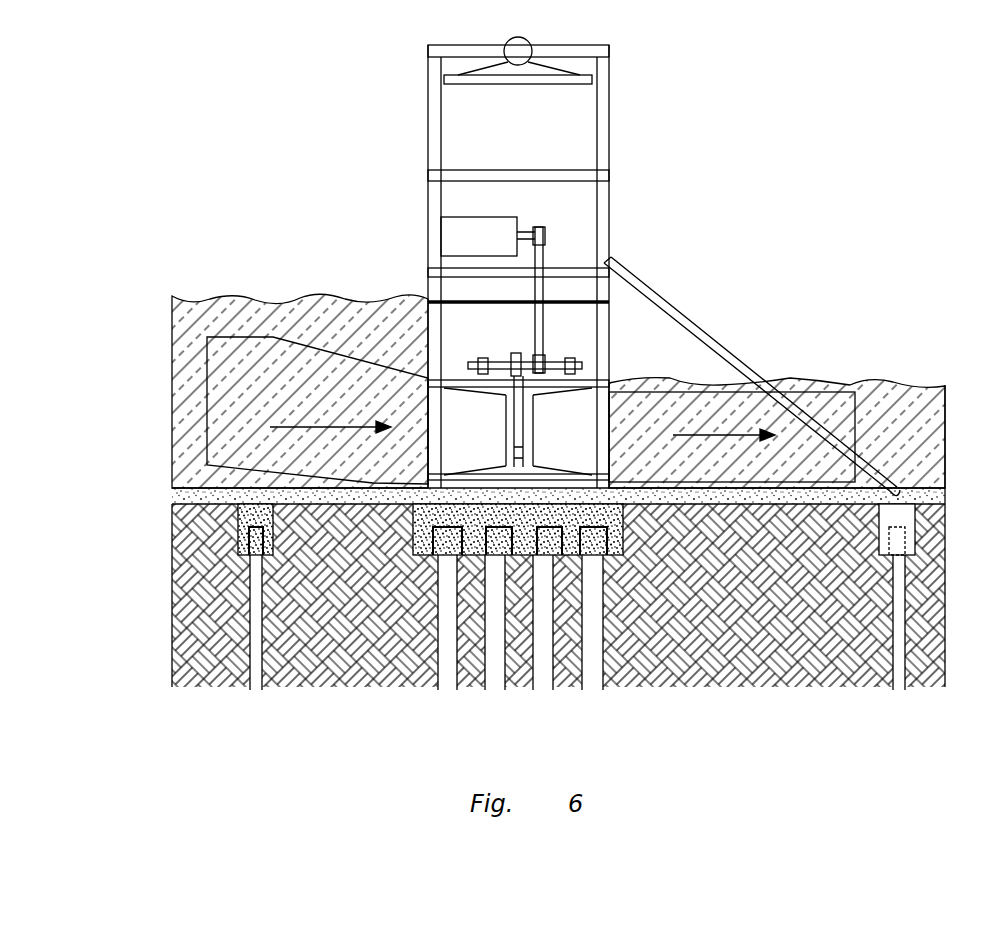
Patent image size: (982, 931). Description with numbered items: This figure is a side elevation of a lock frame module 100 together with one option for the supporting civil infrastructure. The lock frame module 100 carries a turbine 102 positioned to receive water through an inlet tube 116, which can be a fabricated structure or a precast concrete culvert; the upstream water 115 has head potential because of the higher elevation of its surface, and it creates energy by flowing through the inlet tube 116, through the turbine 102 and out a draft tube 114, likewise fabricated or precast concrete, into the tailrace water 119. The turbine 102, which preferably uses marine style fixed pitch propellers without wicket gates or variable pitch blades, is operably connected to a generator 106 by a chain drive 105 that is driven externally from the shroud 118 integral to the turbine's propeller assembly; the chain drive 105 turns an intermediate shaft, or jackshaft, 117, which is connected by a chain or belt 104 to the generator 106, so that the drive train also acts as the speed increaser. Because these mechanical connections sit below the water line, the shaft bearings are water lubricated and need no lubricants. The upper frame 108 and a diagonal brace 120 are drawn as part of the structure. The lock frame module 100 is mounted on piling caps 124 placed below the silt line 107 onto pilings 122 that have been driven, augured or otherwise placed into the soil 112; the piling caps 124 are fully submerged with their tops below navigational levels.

The lock frame module 100 is at (643, 179).
The turbine 102 is at (580, 422).
The chain or belt 104 is at (555, 292).
The chain drive 105 is at (517, 423).
The generator 106 is at (465, 235).
The silt line 107 is at (176, 494).
The support frame 108 is at (475, 133).
The soil 112 is at (778, 650).
The draft tube 114 is at (873, 402).
The upstream water 115 is at (246, 297).
The inlet tube 116 is at (203, 407).
The intermediate shaft (jackshaft) 117 is at (470, 362).
The shroud 118 is at (533, 437).
The tailrace water 119 is at (900, 447).
The brace 120 is at (612, 333).
The pilings 122 is at (417, 657).
The piling caps 124 is at (255, 690).